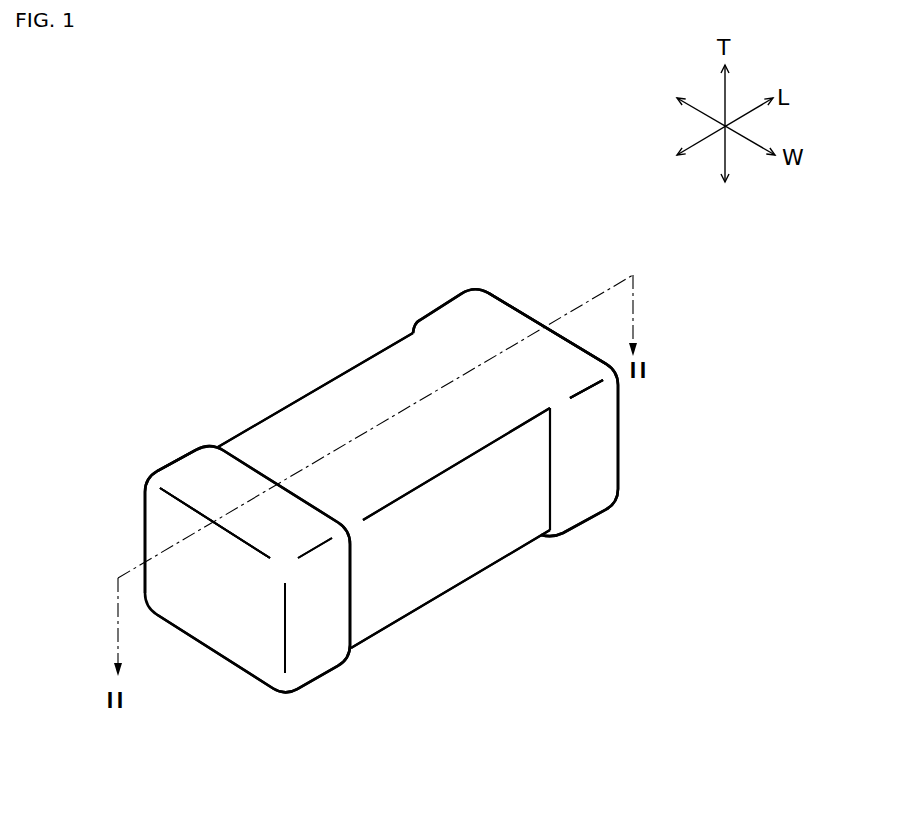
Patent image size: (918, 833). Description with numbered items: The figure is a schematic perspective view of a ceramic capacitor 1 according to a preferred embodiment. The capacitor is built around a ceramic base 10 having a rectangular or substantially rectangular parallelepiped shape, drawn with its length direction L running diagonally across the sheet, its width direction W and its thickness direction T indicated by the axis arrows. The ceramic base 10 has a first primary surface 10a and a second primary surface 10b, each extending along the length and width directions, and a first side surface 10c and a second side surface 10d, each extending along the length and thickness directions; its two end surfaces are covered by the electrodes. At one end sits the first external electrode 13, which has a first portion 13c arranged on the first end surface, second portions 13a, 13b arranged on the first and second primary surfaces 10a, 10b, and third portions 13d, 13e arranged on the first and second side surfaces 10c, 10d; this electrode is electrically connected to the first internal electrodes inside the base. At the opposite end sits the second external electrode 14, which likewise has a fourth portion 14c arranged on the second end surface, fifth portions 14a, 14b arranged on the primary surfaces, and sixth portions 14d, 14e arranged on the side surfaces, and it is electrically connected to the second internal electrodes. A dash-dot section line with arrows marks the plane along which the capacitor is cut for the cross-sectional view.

The ceramic capacitor 1 is at (468, 262).
The ceramic base 10 is at (388, 338).
The first primary surface 10a is at (362, 398).
The second primary surface 10b is at (488, 567).
The first side surface 10c is at (295, 398).
The second side surface 10d is at (417, 572).
The first external electrode 13 is at (125, 552).
The second portion of first external electrode 13a is at (240, 478).
The second portion of first external electrode 13b is at (240, 677).
The first portion of first external electrode 13c is at (208, 605).
The third portion of first external electrode 13d is at (178, 458).
The third portion of first external electrode 13e is at (328, 643).
The second external electrode 14 is at (633, 438).
The fifth portion of second external electrode 14a is at (508, 335).
The fifth portion of second external electrode 14b is at (578, 533).
The fourth portion of second external electrode 14c is at (500, 298).
The sixth portion of second external electrode 14d is at (444, 302).
The sixth portion of second external electrode 14e is at (602, 473).